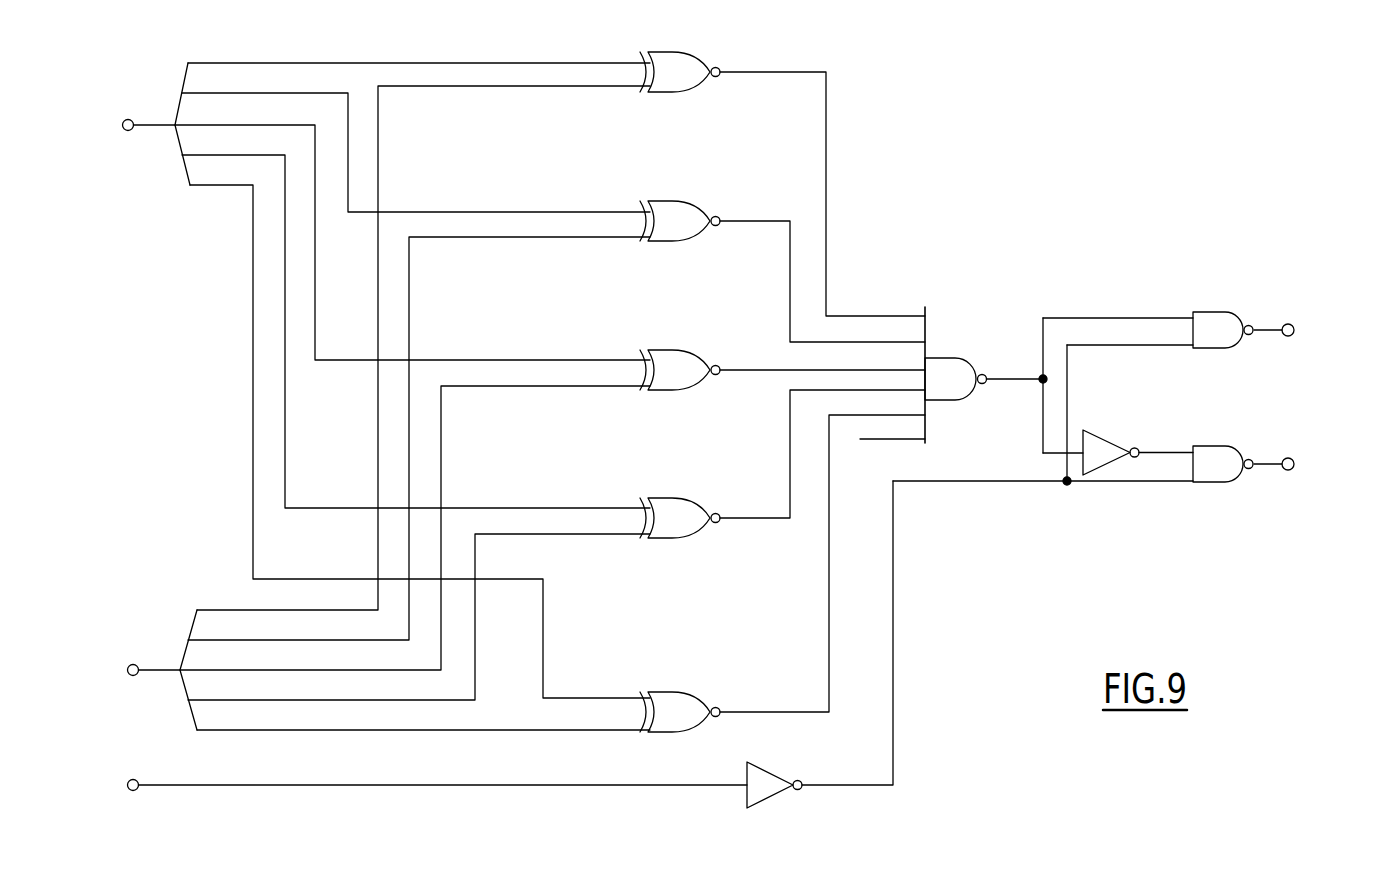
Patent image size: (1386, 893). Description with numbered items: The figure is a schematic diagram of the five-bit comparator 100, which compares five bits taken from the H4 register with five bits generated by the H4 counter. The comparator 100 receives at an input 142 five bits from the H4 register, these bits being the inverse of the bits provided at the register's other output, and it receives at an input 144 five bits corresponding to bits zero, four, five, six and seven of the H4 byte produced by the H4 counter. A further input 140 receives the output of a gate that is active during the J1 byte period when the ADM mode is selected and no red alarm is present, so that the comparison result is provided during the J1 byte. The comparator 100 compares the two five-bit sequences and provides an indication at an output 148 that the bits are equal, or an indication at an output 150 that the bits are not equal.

The five-bit comparator 100 is at (862, 116).
The input 140 is at (133, 779).
The input 142 is at (128, 131).
The input 144 is at (133, 664).
The output 148 is at (1288, 336).
The output 150 is at (1288, 458).